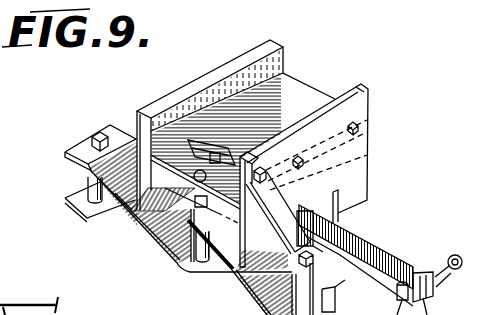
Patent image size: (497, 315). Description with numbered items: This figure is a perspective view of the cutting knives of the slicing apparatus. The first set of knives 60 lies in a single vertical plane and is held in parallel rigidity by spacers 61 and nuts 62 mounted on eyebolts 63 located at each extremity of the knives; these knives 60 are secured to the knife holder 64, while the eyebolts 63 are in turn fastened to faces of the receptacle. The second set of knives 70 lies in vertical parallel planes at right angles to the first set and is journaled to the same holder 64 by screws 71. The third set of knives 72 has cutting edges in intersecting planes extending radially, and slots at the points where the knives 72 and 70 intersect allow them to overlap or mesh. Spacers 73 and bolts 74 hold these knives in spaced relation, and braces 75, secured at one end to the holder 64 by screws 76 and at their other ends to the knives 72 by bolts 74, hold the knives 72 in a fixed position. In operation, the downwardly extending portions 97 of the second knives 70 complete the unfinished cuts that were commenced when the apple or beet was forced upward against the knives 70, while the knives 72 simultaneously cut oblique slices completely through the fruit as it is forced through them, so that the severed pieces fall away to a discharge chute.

The first set of knives 60 is at (406, 246).
The spacers 61 is at (216, 159).
The nuts 62 is at (190, 131).
The eyebolts 63 is at (441, 274).
The knife holder 64 is at (312, 86).
The second set of knives 70 is at (348, 192).
The screws 71 is at (350, 131).
The third set of knives 72 is at (246, 291).
The spacers 73 is at (88, 178).
The bolts 74 is at (96, 136).
The braces 75 is at (122, 138).
The screws 76 is at (264, 164).
The downwardly extending portions 97 is at (170, 240).